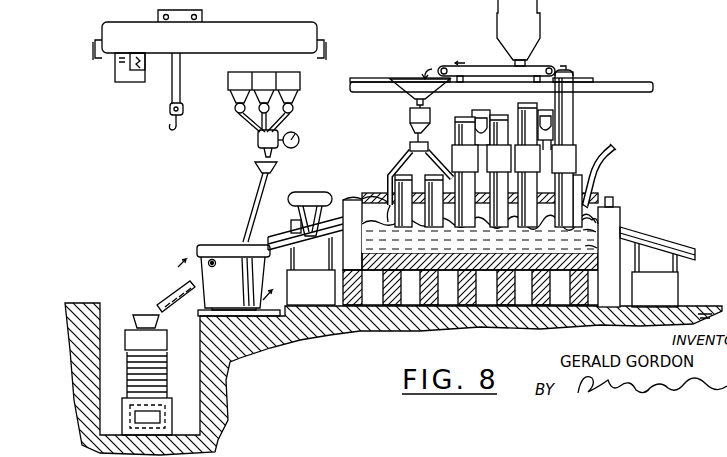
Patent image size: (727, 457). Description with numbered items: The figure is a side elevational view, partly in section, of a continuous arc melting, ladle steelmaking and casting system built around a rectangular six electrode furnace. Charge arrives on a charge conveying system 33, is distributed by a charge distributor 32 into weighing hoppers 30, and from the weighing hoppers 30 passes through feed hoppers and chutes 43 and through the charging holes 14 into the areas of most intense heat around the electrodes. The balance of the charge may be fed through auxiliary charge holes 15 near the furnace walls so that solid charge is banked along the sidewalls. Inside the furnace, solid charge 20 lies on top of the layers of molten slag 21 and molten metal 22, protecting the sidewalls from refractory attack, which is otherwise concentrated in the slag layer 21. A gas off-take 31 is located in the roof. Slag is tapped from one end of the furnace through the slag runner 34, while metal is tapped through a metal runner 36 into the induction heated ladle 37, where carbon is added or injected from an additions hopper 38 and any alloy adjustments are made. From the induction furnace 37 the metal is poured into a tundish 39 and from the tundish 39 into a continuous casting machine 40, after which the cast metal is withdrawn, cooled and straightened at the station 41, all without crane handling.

The charging holes 14 is at (385, 197).
The auxiliary charge holes 15 is at (357, 197).
The solid charge 20 is at (600, 216).
The molten slag 21 is at (597, 233).
The molten metal 22 is at (587, 246).
The weighing hoppers 30 is at (410, 117).
The gas off-take 31 is at (619, 146).
The charge distributor 32 is at (540, 64).
The charge conveying system 33 is at (541, 19).
The slag runner 34 is at (683, 247).
The metal runner 36 is at (292, 250).
The induction heated ladle 37 is at (222, 246).
The additions hopper 38 is at (222, 96).
The tundish 39 is at (146, 314).
The continuous casting machine 40 is at (135, 338).
The withdrawing, cooling and straightening station 41 is at (121, 414).
The feed hoppers and chutes 43 is at (410, 147).